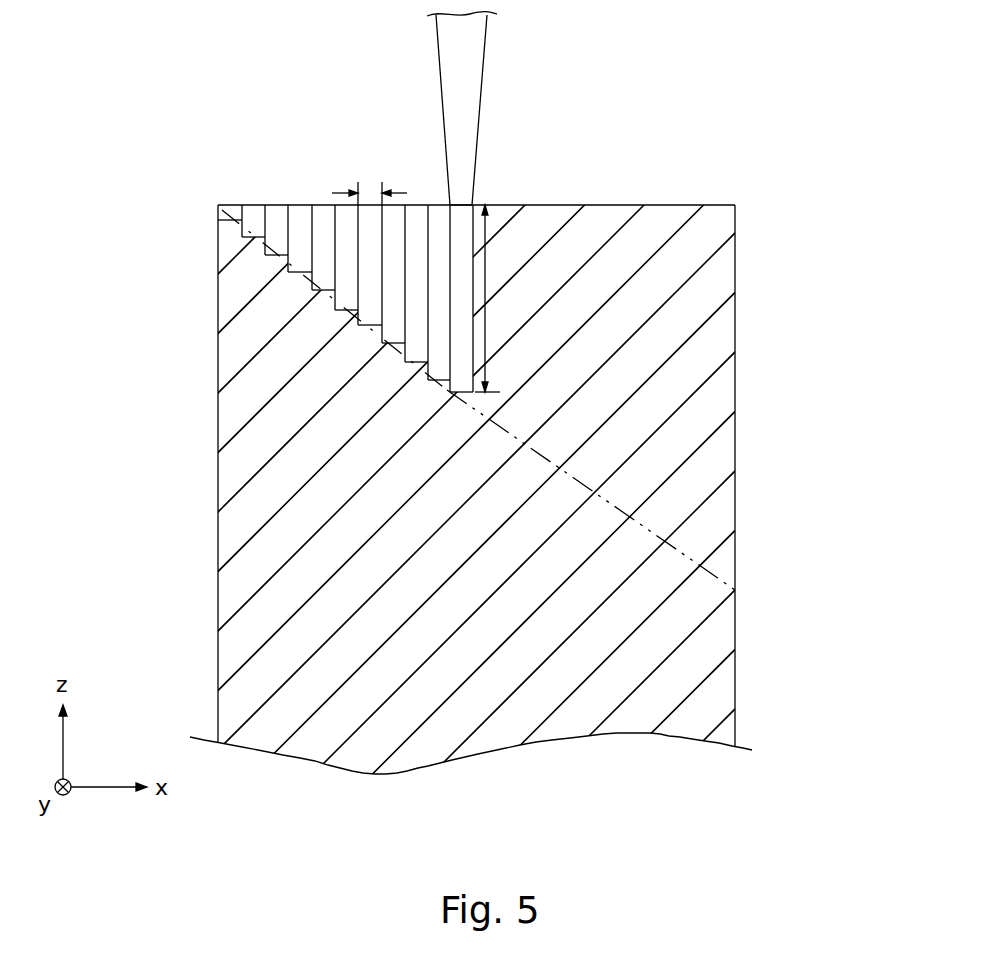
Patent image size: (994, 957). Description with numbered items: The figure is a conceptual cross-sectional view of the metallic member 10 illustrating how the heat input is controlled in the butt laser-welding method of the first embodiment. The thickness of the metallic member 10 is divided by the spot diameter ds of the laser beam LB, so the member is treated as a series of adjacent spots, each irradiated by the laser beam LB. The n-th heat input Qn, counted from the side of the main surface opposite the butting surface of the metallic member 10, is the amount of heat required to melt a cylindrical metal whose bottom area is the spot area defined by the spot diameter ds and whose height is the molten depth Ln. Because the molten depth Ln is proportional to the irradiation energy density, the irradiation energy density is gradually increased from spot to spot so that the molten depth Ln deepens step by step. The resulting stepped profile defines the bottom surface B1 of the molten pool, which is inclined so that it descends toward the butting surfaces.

The metallic member 10 is at (218, 399).
The laser beam LB is at (481, 58).
The n-th heat input Qn is at (474, 202).
The spot diameter ds is at (370, 178).
The molten depth Ln is at (502, 298).
The bottom surface of the molten pool B1 is at (735, 588).